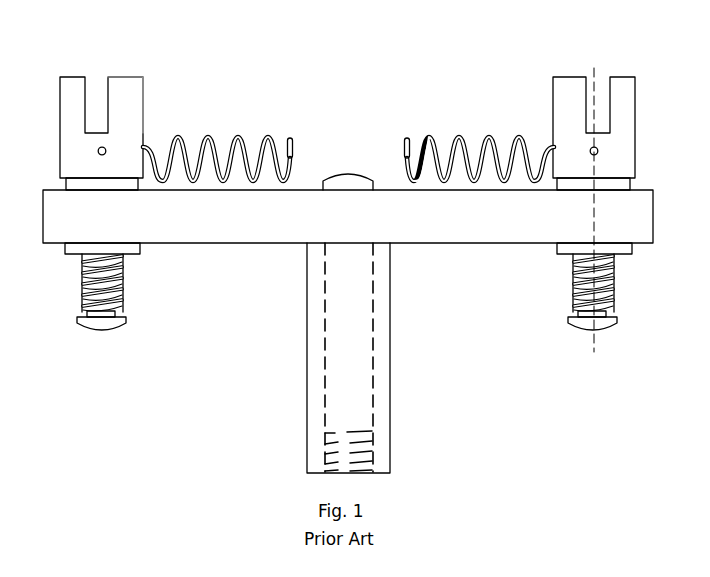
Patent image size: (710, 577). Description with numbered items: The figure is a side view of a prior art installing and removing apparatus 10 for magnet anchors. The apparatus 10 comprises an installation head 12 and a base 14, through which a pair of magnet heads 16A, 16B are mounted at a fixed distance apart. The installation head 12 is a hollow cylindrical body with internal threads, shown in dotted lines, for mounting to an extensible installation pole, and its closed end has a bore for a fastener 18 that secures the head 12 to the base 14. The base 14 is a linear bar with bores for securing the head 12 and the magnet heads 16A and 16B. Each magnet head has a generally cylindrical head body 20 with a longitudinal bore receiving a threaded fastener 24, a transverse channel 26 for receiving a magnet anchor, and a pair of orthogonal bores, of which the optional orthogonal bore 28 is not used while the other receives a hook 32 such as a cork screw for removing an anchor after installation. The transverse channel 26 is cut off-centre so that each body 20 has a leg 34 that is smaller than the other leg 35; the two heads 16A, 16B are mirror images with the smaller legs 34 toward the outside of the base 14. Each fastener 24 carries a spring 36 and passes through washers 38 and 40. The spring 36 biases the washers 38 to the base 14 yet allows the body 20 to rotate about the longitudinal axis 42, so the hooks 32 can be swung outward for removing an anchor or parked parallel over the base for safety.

The installing and removing apparatus 10 is at (543, 416).
The installation head 12 is at (359, 406).
The base 14 is at (358, 227).
The magnet head 16A is at (190, 124).
The magnet head 16B is at (507, 123).
The fastener 18 is at (350, 180).
The head body 20 is at (138, 140).
The threaded fastener 24 is at (108, 335).
The transverse channel 26 is at (101, 132).
The orthogonal bore 28 is at (106, 154).
The hook 32 is at (290, 137).
The leg 34 is at (80, 76).
The leg 35 is at (569, 76).
The spring 36 is at (124, 300).
The washer 38 is at (128, 250).
The washer 40 is at (118, 187).
The longitudinal axis 42 is at (594, 220).